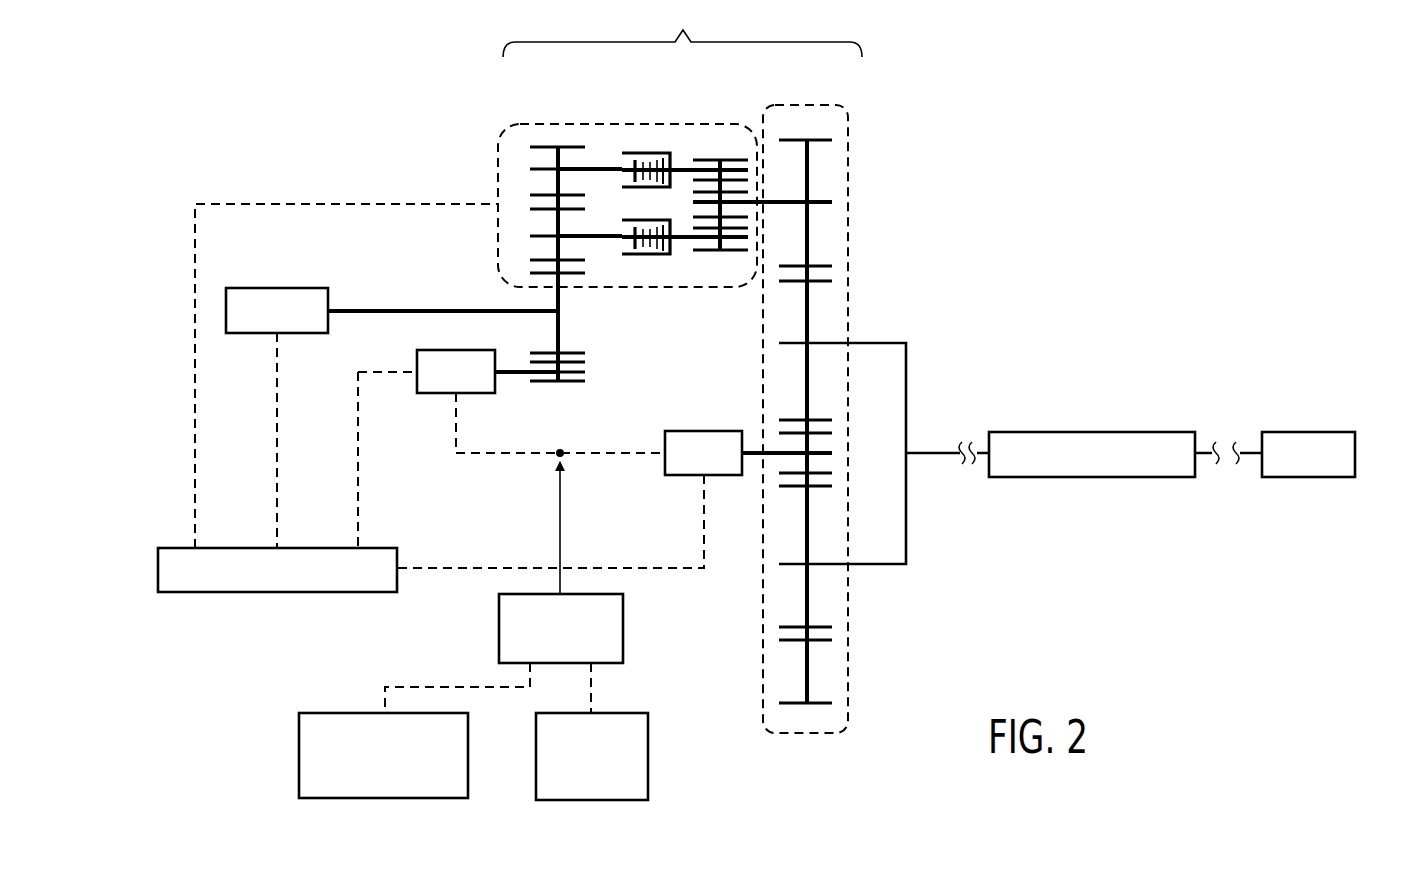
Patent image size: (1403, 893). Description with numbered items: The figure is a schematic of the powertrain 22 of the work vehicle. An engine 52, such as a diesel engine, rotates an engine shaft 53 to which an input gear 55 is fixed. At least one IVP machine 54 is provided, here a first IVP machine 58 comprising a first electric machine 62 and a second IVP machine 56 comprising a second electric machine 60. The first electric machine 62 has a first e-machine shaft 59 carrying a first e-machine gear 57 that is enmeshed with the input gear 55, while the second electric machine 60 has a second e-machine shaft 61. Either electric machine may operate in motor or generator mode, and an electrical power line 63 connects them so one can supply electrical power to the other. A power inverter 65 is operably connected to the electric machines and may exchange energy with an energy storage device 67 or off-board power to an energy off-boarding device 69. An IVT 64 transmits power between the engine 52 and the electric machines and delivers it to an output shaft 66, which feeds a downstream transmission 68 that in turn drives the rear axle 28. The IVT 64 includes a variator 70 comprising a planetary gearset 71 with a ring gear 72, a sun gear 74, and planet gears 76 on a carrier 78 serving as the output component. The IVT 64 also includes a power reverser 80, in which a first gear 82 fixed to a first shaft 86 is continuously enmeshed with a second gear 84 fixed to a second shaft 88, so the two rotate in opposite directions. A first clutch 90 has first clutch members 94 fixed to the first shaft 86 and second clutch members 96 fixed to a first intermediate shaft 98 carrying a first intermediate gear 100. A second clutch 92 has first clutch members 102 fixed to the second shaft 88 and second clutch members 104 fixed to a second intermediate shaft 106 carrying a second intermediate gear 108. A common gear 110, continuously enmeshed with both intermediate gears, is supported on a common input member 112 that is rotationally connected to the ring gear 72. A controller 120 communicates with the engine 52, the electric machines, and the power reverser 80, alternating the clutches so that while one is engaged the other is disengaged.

The powertrain 22 is at (270, 104).
The rear axle 28 is at (1310, 477).
The engine 52 is at (278, 288).
The engine shaft 53 is at (465, 311).
The IVP machine 54 is at (418, 398).
The input gear 55 is at (562, 290).
The second IVP machine 56 is at (708, 431).
The first e-machine gear 57 is at (560, 382).
The first IVP machine 58 is at (455, 350).
The first e-machine shaft 59 is at (585, 372).
The second electric machine 60 is at (672, 431).
The second e-machine shaft 61 is at (745, 460).
The first electric machine 62 is at (475, 350).
The electrical power line 63 is at (534, 465).
The IVT 64 is at (682, 29).
The power inverter 65 is at (623, 626).
The output shaft 66 is at (922, 444).
The energy storage device 67 is at (620, 713).
The downstream transmission 68 is at (1092, 432).
The energy off-boarding device 69 is at (328, 713).
The variator 70 is at (858, 132).
The planetary gearset 71 is at (830, 302).
The ring gear 72 is at (810, 171).
The sun gear 74 is at (815, 437).
The planet gears 76 is at (805, 314).
The carrier 78 is at (890, 343).
The power reverser 80 is at (494, 126).
The first gear 82 is at (533, 222).
The second gear 84 is at (533, 160).
The first shaft 86 is at (590, 240).
The second shaft 88 is at (600, 167).
The first clutch 90 is at (648, 260).
The second clutch 92 is at (648, 148).
The first clutch members 94 is at (622, 233).
The second clutch members 96 is at (648, 220).
The first intermediate shaft 98 is at (668, 258).
The first intermediate gear 100 is at (746, 249).
The first clutch members 102 is at (628, 154).
The second clutch members 104 is at (668, 150).
The second intermediate shaft 106 is at (690, 165).
The second intermediate gear 108 is at (736, 156).
The common gear 110 is at (757, 200).
The common input member 112 is at (820, 205).
The controller 120 is at (282, 592).